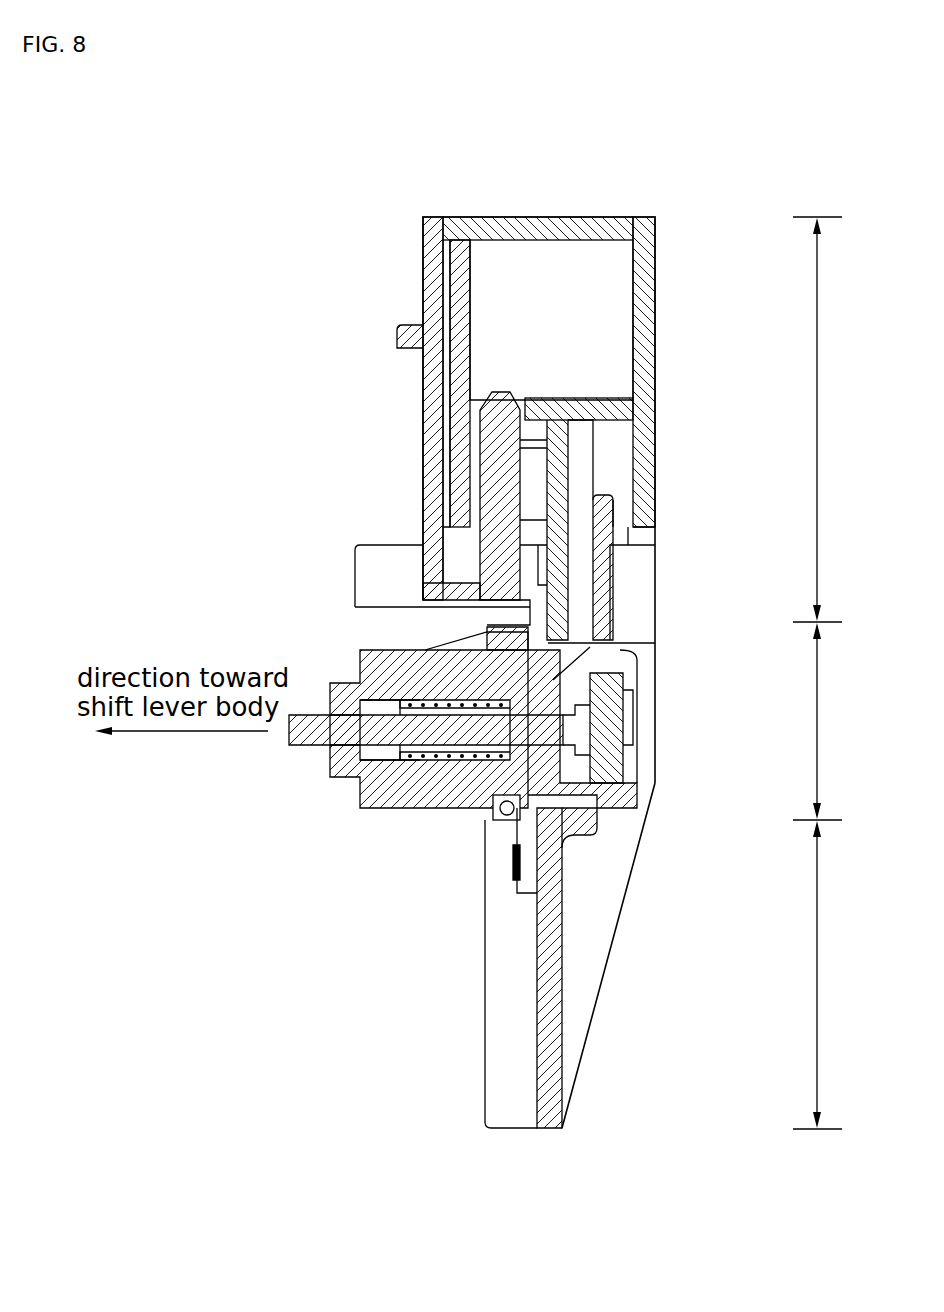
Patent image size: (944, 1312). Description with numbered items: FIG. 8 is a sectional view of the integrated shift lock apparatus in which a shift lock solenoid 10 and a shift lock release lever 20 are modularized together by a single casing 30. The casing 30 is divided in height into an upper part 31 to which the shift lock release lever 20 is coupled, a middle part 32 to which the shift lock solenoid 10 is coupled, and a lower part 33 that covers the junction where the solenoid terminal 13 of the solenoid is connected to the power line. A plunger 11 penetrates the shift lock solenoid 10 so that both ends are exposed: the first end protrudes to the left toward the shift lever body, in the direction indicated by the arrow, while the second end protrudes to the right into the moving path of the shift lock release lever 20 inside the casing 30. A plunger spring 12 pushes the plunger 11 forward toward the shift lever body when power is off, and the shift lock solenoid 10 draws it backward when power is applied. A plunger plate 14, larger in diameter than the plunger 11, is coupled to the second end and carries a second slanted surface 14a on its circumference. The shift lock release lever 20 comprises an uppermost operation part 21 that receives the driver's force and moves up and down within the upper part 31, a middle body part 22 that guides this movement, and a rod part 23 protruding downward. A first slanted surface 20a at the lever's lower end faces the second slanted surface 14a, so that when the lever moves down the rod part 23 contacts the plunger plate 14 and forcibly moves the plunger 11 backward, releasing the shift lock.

The shift lock solenoid 10 is at (370, 660).
The plunger 11 is at (350, 758).
The plunger spring 12 is at (442, 760).
The solenoid terminal 13 is at (515, 870).
The plunger plate 14 is at (640, 735).
The second slanted surface 14a is at (640, 686).
The shift lock release lever 20 is at (557, 204).
The first slanted surface 20a is at (641, 642).
The operation part 21 is at (511, 278).
The body part 22 is at (548, 344).
The rod part 23 is at (582, 556).
The casing 30 is at (383, 462).
The upper part 31 is at (832, 419).
The middle part 32 is at (832, 721).
The lower part 33 is at (832, 975).